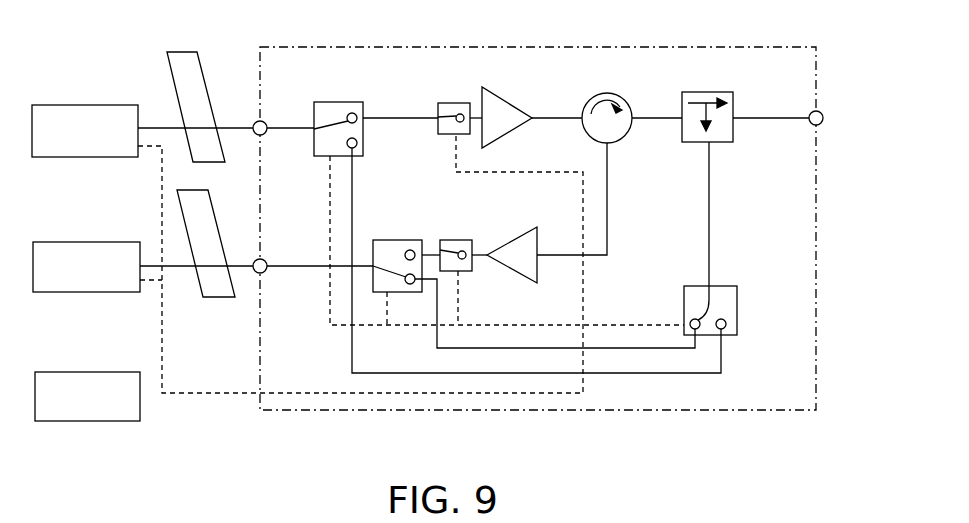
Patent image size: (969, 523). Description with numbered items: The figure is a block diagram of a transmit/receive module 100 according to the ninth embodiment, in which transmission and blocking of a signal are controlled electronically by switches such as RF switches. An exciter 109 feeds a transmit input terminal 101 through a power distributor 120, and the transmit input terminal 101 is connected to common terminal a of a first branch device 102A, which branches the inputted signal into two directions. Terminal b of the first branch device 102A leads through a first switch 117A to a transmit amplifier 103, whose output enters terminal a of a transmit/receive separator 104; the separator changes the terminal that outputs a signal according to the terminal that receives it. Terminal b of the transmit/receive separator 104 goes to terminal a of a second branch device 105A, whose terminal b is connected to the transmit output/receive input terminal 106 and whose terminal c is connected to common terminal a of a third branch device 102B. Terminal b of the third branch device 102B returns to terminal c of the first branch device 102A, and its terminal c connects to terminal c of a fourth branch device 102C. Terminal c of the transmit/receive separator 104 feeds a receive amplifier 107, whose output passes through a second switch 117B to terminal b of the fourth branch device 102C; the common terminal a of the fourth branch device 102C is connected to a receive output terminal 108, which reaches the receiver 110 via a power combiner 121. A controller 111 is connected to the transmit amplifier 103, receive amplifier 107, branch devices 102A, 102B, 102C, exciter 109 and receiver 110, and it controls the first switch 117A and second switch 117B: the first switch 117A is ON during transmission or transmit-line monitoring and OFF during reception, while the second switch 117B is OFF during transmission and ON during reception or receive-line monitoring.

The transmit/receive module 100 is at (425, 34).
The transmit input terminal 101 is at (262, 121).
The first branch device 102A is at (345, 102).
The third branch device 102B is at (695, 286).
The fourth branch device 102C is at (400, 240).
The transmit amplifier 103 is at (493, 96).
The transmit/receive separator 104 is at (622, 93).
The second branch device 105A is at (707, 92).
The transmit output/receive input terminal 106 is at (818, 111).
The receive amplifier 107 is at (520, 234).
The receive output terminal 108 is at (262, 259).
The exciter 109 is at (92, 86).
The receiver 110 is at (85, 242).
The controller 111 is at (85, 372).
The first switch 117A is at (453, 103).
The second switch 117B is at (450, 240).
The power distributor 120 is at (192, 52).
The power combiner 121 is at (217, 297).